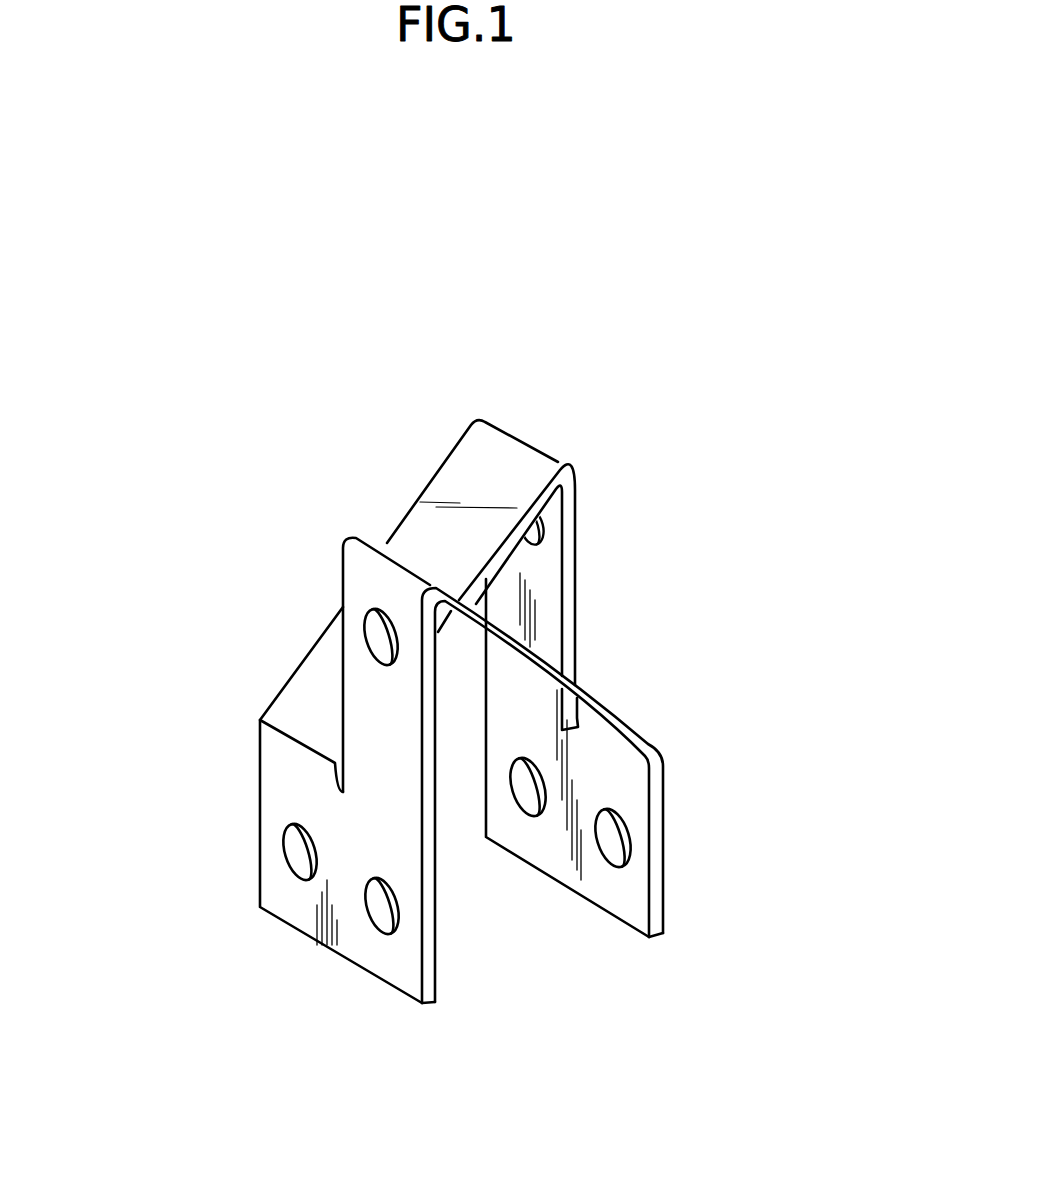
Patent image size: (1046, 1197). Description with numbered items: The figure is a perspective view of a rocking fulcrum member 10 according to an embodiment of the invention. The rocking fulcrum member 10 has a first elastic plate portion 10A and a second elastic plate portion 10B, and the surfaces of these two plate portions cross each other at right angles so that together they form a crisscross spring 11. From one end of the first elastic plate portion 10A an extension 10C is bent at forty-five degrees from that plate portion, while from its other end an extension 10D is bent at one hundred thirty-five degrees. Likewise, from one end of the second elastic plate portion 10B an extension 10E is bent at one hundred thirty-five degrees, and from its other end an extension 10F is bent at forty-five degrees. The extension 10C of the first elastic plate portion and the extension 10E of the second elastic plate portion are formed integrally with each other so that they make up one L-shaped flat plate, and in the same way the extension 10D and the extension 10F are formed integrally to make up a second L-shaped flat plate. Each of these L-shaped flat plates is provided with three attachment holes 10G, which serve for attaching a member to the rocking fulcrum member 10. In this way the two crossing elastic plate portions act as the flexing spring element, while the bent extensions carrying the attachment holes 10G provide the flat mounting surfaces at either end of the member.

The rocking fulcrum member 10 is at (636, 314).
The crisscross spring 11 is at (364, 458).
The first elastic plate portion 10A is at (587, 703).
The second elastic plate portion 10B is at (449, 488).
The extension 10C is at (410, 840).
The extension 10D is at (637, 902).
The extension 10E is at (282, 785).
The extension 10F is at (572, 575).
The attachment holes 10G is at (367, 617).